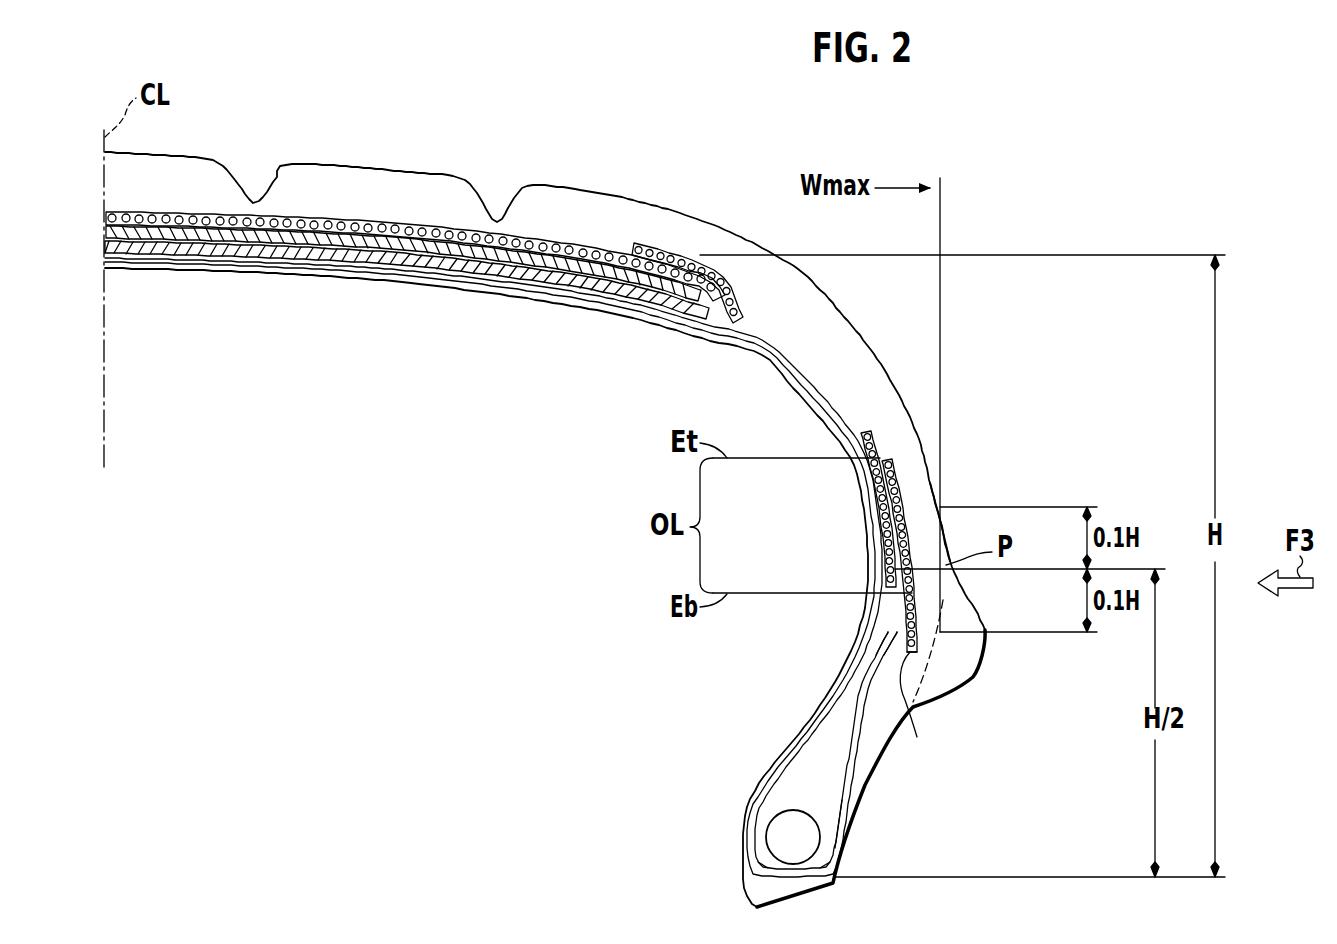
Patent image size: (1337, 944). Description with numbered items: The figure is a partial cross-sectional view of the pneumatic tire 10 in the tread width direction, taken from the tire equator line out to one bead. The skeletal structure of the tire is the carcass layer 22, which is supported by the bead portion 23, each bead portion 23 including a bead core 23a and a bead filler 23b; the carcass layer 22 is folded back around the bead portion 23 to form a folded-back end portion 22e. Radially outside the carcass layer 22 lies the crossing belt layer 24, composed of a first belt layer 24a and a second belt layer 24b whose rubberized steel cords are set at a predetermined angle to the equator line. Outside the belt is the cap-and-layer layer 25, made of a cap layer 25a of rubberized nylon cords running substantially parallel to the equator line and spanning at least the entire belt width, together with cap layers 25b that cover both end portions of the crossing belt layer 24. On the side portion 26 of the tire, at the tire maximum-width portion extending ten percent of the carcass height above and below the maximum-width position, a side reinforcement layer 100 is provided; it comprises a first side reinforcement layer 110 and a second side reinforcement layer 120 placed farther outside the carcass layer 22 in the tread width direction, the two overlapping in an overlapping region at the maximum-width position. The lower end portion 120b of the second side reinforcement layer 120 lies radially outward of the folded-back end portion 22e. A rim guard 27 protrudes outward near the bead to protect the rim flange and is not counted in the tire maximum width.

The pneumatic tire 10 is at (346, 122).
The carcass layer 22 is at (842, 672).
The folded-back end portion 22e is at (888, 631).
The bead portion 23 is at (652, 735).
The bead core 23a is at (772, 836).
The bead filler 23b is at (812, 752).
The crossing belt layer 24 is at (523, 120).
The first belt layer 24a is at (418, 262).
The second belt layer 24b is at (497, 243).
The cap-and-layer layer 25 is at (678, 120).
The cap layer 25a is at (573, 243).
The cap layer 25b is at (663, 247).
The side portion 26 is at (958, 520).
The rim guard 27 is at (963, 642).
The side reinforcement layer 100 is at (1040, 375).
The first side reinforcement layer 110 is at (886, 435).
The second side reinforcement layer 120 is at (917, 484).
The lower end portion 120b is at (908, 660).